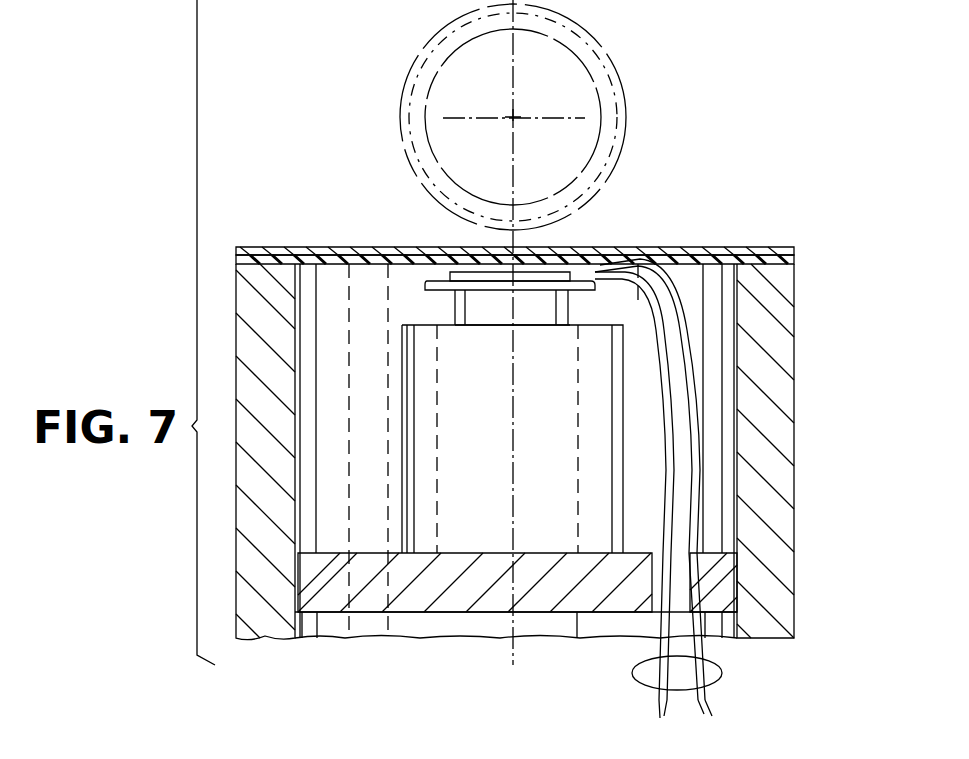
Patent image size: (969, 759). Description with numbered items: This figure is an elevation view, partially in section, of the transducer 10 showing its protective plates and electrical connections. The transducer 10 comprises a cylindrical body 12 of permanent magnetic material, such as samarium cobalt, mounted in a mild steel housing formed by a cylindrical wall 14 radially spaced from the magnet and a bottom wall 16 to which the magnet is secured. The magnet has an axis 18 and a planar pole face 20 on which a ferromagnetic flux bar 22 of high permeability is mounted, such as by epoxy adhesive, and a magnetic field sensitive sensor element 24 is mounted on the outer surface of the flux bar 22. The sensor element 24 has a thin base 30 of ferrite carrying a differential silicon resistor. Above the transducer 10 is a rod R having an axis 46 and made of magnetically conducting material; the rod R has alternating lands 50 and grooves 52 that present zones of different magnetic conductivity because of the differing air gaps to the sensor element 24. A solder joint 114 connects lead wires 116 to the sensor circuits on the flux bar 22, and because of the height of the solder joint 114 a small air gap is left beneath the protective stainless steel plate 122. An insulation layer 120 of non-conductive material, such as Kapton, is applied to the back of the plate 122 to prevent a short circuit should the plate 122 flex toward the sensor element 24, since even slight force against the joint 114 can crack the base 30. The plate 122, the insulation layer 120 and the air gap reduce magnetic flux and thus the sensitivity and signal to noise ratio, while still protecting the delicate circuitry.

The transducer 10 is at (768, 220).
The cylindrical body 12 is at (400, 478).
The cylindrical wall 14 is at (770, 421).
The bottom wall 16 is at (722, 582).
The axis 18 is at (510, 495).
The planar pole face 20 is at (415, 323).
The flux bar 22 is at (484, 333).
The sensor element 24 is at (585, 270).
The base 30 is at (430, 286).
The axis 46 is at (515, 116).
The land 50 is at (405, 80).
The groove 52 is at (428, 121).
The rod R is at (614, 62).
The solder joint 114 is at (600, 265).
The lead wires 116 is at (720, 676).
The insulation layer 120 is at (795, 262).
The protective stainless steel plate 122 is at (795, 247).